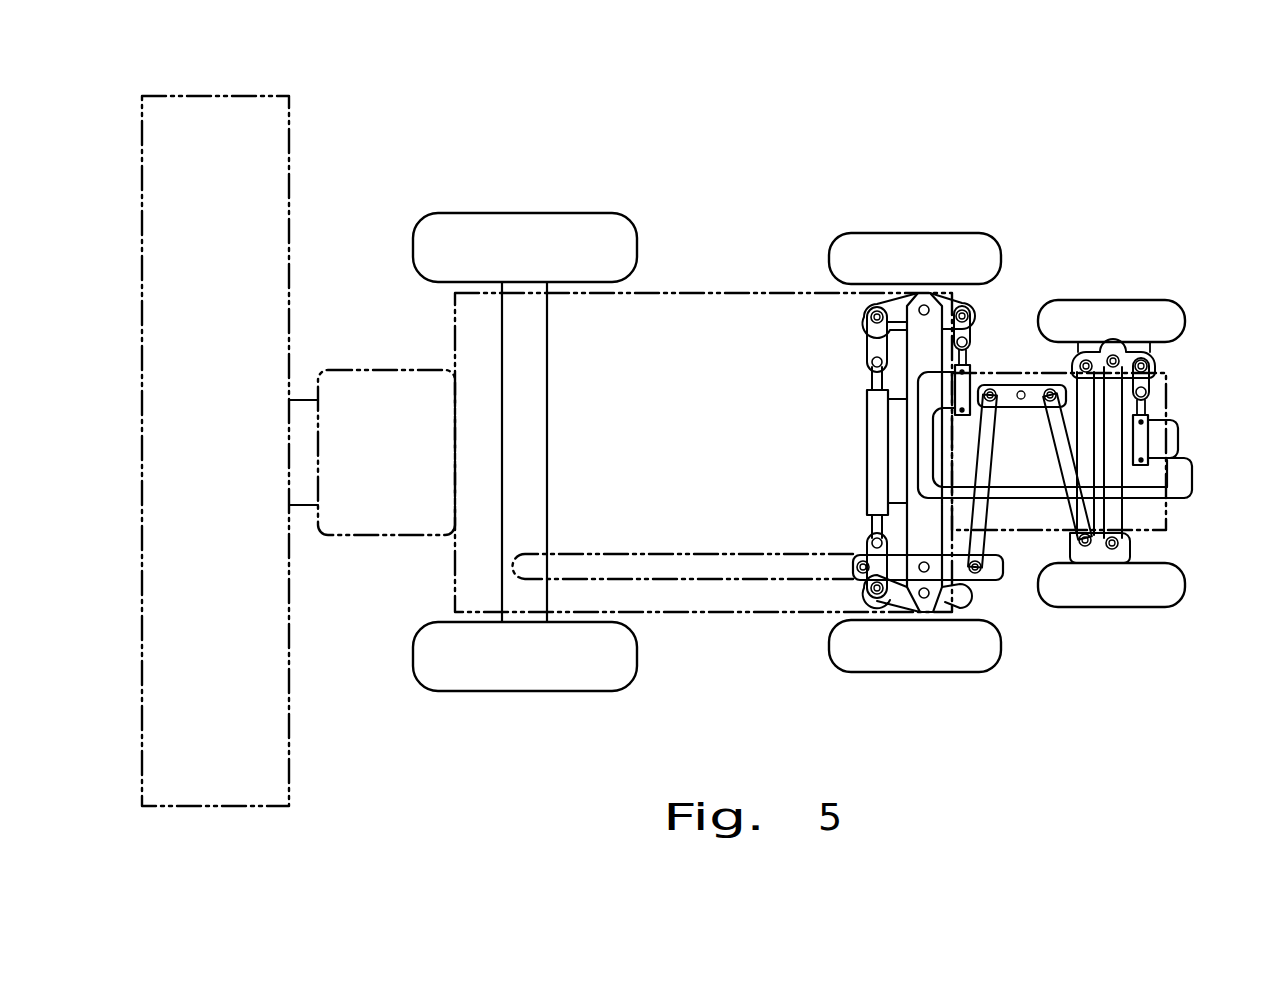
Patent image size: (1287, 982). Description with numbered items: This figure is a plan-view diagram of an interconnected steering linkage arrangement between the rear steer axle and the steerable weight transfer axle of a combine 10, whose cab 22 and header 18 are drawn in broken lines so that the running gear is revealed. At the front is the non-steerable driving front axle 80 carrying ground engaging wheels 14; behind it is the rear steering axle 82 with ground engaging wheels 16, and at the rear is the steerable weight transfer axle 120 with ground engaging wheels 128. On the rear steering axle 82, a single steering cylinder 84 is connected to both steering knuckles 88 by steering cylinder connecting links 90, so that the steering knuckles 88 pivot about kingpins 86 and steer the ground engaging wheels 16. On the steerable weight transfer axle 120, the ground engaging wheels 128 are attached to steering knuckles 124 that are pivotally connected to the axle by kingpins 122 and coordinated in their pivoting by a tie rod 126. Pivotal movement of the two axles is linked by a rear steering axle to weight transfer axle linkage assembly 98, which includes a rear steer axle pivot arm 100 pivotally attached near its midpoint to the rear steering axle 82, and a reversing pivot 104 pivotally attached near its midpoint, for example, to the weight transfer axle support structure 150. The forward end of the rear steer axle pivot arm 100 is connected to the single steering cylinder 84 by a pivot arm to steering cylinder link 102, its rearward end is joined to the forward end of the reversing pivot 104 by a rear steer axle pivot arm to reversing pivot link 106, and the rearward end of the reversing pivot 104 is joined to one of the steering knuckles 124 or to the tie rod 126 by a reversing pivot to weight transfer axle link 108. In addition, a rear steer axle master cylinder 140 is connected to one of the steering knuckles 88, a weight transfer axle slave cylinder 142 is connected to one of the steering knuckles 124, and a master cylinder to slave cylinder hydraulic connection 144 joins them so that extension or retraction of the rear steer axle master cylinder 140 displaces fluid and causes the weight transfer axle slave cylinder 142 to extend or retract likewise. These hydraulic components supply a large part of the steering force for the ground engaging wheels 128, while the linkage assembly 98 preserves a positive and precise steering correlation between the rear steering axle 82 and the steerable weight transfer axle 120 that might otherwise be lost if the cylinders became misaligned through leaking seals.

The combine 10 is at (710, 293).
The ground engaging wheels 14 is at (498, 683).
The ground engaging wheels 16 is at (955, 672).
The header 18 is at (193, 96).
The cab 22 is at (338, 370).
The non-steerable driving front axle 80 is at (548, 351).
The rear steering axle 82 is at (871, 380).
The single steering cylinder 84 is at (867, 430).
The kingpins 86 is at (924, 304).
The steering knuckles 88 is at (963, 304).
The steering cylinder connecting links 90 is at (867, 340).
The rear steering axle to weight transfer axle linkage assembly 98 is at (1054, 362).
The rear steer axle pivot arm 100 is at (975, 587).
The pivot arm to steering cylinder link 102 is at (860, 546).
The reversing pivot 104 is at (1009, 383).
The rear steer axle pivot arm to reversing pivot link 106 is at (984, 562).
The reversing pivot to weight transfer axle link 108 is at (1068, 506).
The steerable weight transfer axle 120 is at (1120, 510).
The kingpins 122 is at (1114, 354).
The steering knuckles 124 is at (1150, 362).
The tie rod 126 is at (1062, 432).
The ground engaging wheels 128 is at (1183, 305).
The rear steer axle master cylinder 140 is at (968, 362).
The weight transfer axle slave cylinder 142 is at (1150, 421).
The master cylinder to slave cylinder hydraulic connection 144 is at (1194, 480).
The weight transfer axle support structure 150 is at (1168, 383).